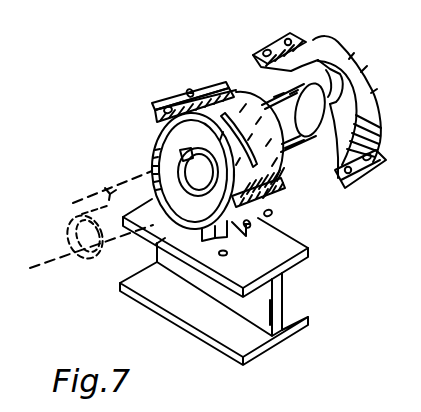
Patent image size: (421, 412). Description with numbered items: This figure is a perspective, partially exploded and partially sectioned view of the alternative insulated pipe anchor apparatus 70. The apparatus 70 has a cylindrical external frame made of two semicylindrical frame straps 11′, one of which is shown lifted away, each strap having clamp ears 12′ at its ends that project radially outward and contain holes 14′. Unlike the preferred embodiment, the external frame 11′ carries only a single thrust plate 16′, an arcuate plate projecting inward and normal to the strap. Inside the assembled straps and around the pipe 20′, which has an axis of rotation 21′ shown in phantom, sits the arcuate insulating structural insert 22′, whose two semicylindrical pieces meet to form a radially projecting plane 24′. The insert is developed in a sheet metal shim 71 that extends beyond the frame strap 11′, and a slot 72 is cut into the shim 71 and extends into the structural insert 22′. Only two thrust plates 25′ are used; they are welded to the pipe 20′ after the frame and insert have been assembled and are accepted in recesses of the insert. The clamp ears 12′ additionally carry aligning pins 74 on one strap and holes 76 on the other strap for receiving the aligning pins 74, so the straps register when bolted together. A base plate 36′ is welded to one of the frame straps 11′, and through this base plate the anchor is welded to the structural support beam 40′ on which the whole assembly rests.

The insulated pipe anchor apparatus 70 is at (320, 211).
The frame strap 11′ is at (369, 85).
The clamp ear 12′ is at (205, 95).
The hole 14′ is at (165, 108).
The thrust plate 16′ is at (333, 71).
The pipe 20′ is at (91, 219).
The axis of rotation 21′ is at (92, 237).
The insulating structural insert 22′ is at (156, 244).
The plane 24′ is at (277, 171).
The thrust plate 25′ is at (158, 132).
The base plate 36′ is at (197, 205).
The structural support beam 40′ is at (256, 338).
The sheet metal shim 71 is at (153, 156).
The slot 72 is at (228, 91).
The aligning pin 74 is at (189, 91).
The hole 76 is at (288, 38).